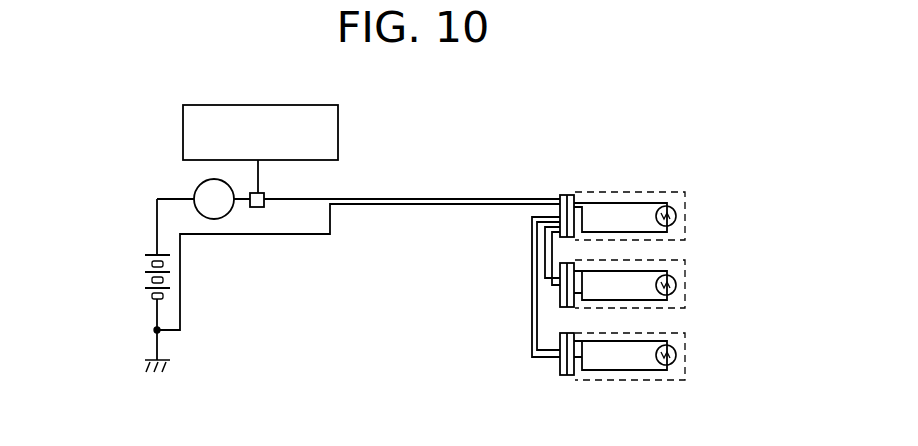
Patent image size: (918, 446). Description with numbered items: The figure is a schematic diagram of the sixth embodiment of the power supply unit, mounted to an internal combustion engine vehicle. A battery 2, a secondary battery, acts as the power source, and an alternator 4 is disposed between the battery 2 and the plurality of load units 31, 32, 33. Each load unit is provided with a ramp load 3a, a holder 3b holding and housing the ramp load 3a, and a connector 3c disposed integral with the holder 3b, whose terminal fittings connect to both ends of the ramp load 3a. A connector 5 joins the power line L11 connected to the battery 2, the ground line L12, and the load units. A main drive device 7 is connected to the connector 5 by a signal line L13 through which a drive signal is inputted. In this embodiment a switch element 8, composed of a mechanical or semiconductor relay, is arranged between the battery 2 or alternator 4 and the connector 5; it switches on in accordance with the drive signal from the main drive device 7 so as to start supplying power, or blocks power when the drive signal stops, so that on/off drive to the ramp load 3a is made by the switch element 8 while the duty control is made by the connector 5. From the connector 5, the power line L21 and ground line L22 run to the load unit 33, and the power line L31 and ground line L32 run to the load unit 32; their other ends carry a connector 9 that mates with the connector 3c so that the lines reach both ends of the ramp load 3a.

The battery 2 is at (155, 251).
The alternator 4 is at (203, 185).
The connector 5 is at (561, 195).
The main drive device 7 is at (258, 105).
The switch element 8 is at (262, 207).
The connector 9 is at (557, 293).
The ramp load 3a is at (677, 216).
The holder 3b is at (686, 242).
The connector 3c is at (567, 195).
The load unit 31 is at (690, 194).
The load unit 32 is at (690, 267).
The load unit 33 is at (690, 335).
The power line L11 is at (482, 199).
The ground line L12 is at (428, 204).
The signal line L13 is at (259, 182).
The power line L21 is at (537, 307).
The ground line L22 is at (532, 337).
The power line L31 is at (552, 242).
The ground line L32 is at (545, 250).